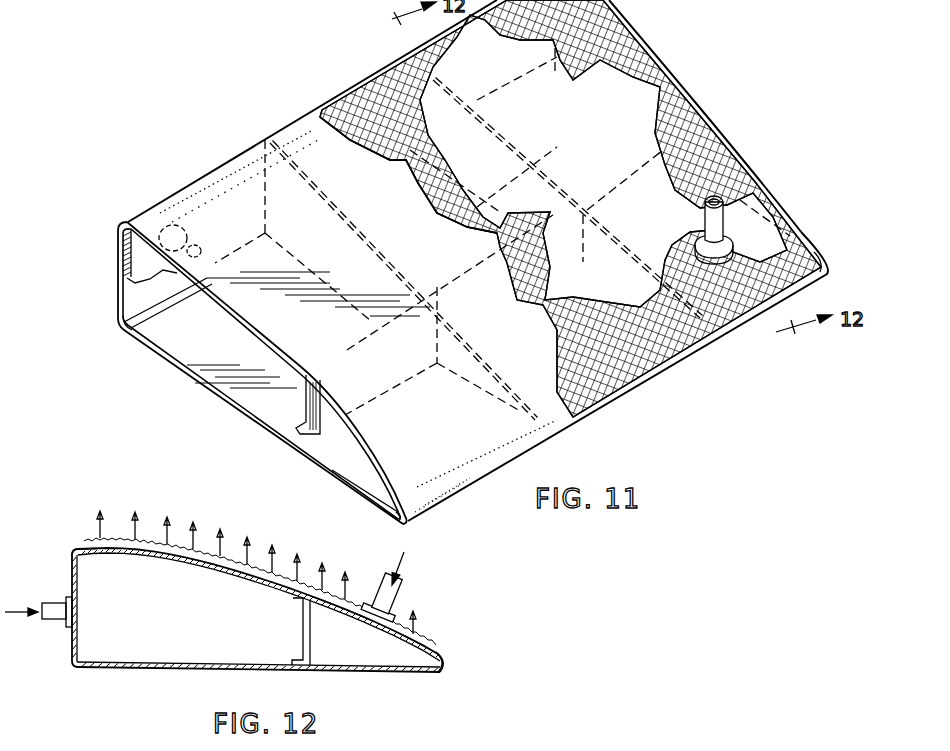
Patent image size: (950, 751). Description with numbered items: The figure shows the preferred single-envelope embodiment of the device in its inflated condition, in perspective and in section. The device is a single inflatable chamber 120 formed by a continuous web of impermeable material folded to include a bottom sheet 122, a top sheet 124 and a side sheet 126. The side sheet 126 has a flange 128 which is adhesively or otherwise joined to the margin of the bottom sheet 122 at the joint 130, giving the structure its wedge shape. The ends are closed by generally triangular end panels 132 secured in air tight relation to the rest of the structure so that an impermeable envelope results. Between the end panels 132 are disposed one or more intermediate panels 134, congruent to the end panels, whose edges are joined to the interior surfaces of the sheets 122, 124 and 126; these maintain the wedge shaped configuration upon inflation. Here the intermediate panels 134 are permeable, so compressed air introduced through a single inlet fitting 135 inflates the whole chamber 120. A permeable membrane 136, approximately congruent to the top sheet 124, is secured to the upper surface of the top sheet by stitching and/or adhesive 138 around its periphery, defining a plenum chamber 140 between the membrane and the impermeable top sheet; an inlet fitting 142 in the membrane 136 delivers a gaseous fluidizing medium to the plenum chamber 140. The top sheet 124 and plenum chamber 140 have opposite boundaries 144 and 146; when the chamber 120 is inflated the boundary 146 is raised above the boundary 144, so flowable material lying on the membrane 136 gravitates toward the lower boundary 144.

In FIG. 11, the inflatable chamber 120 is at (236, 373).
In FIG. 12, the inflatable chamber 120 is at (160, 633).
In FIG. 11, the bottom sheet 122 is at (262, 428).
In FIG. 12, the bottom sheet 122 is at (172, 668).
In FIG. 11, the top sheet 124 is at (253, 331).
In FIG. 12, the top sheet 124 is at (222, 576).
In FIG. 11, the side sheet 126 is at (118, 238).
In FIG. 12, the side sheet 126 is at (78, 578).
In FIG. 11, the flange 128 is at (160, 300).
In FIG. 11, the joint 130 is at (119, 330).
In FIG. 11, the end panels 132 is at (370, 473).
In FIG. 11, the intermediate panels 134 is at (407, 248).
In FIG. 11, the inlet fitting 135 is at (170, 225).
In FIG. 11, the permeable membrane 136 is at (367, 146).
In FIG. 12, the permeable membrane 136 is at (303, 580).
In FIG. 11, the stitching and/or adhesive 138 is at (335, 113).
In FIG. 12, the plenum chamber 140 is at (178, 548).
In FIG. 11, the inlet fitting 142 is at (703, 220).
In FIG. 12, the inlet fitting 142 is at (390, 602).
In FIG. 11, the boundary 144 is at (578, 420).
In FIG. 12, the boundary 144 is at (441, 660).
In FIG. 11, the boundary 146 is at (226, 158).
In FIG. 12, the boundary 146 is at (76, 547).